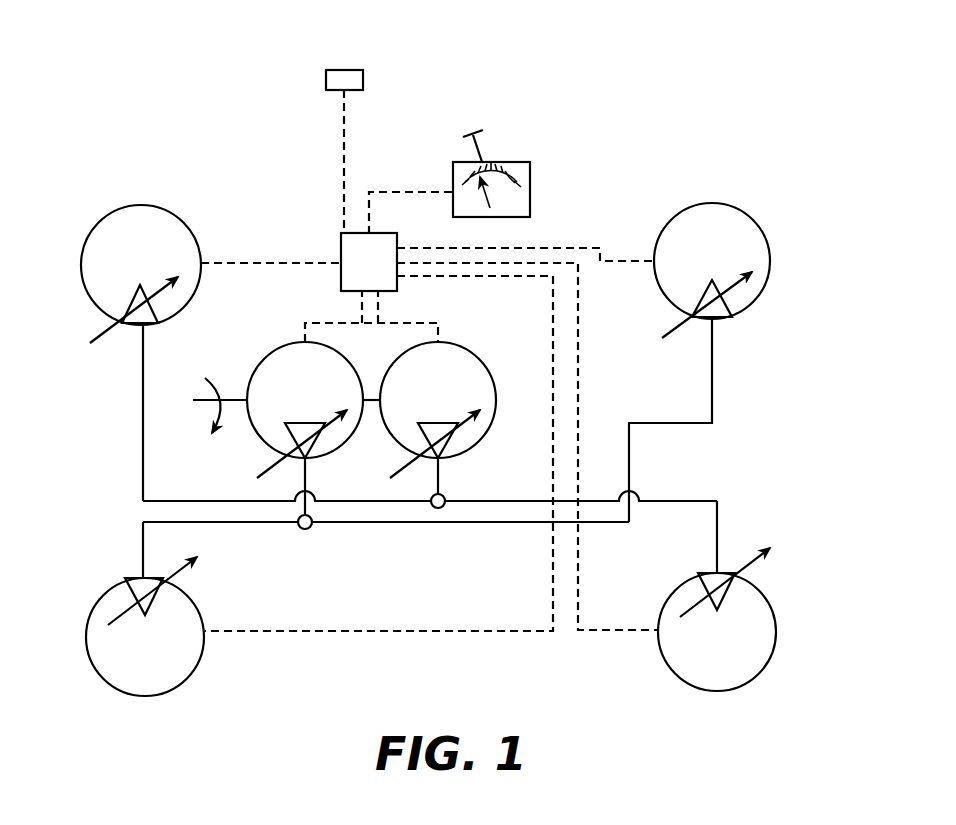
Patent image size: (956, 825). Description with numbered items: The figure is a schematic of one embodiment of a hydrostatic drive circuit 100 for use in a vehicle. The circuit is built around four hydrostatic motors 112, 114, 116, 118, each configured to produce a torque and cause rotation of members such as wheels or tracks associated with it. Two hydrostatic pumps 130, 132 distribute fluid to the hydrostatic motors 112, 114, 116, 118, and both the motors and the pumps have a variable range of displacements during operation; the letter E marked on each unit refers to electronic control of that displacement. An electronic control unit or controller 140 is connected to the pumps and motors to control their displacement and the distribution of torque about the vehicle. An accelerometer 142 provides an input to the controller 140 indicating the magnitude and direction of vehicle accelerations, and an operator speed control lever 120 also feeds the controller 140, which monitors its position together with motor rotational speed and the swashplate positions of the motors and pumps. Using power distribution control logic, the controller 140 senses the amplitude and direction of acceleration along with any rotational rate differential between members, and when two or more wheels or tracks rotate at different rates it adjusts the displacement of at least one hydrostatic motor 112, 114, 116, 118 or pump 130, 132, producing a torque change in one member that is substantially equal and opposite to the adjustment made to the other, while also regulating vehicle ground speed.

The hydrostatic drive circuit 100 is at (203, 108).
The hydrostatic motor 112 is at (195, 665).
The hydrostatic motor 114 is at (104, 217).
The hydrostatic motor 116 is at (772, 257).
The hydrostatic motor 118 is at (777, 630).
The operator speed control lever 120 is at (530, 187).
The hydrostatic pump 130 is at (258, 360).
The hydrostatic pump 132 is at (485, 360).
The controller 140 is at (341, 250).
The accelerometer 142 is at (343, 70).